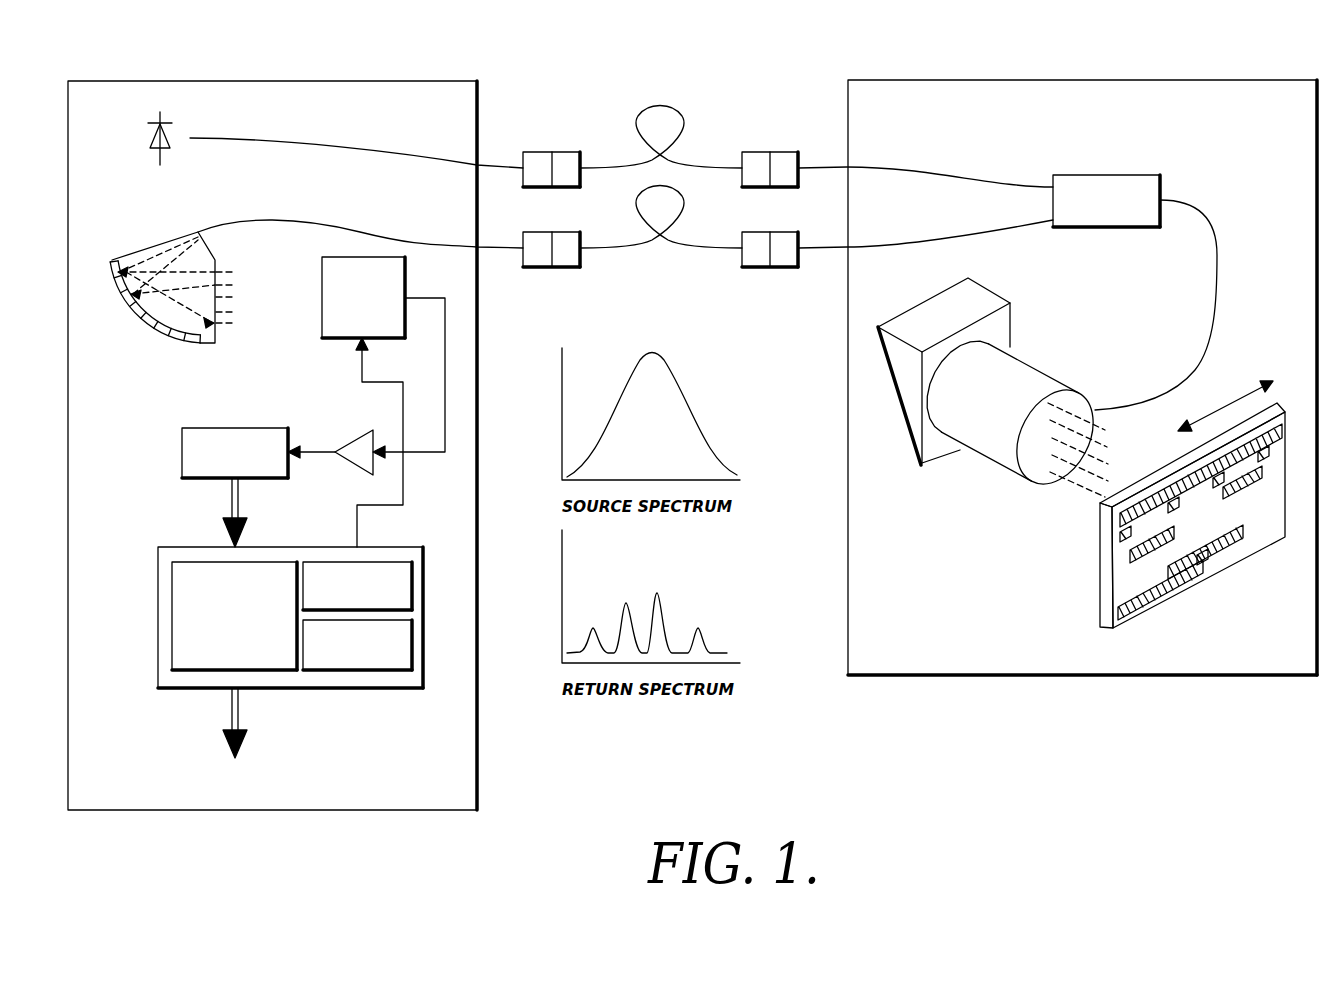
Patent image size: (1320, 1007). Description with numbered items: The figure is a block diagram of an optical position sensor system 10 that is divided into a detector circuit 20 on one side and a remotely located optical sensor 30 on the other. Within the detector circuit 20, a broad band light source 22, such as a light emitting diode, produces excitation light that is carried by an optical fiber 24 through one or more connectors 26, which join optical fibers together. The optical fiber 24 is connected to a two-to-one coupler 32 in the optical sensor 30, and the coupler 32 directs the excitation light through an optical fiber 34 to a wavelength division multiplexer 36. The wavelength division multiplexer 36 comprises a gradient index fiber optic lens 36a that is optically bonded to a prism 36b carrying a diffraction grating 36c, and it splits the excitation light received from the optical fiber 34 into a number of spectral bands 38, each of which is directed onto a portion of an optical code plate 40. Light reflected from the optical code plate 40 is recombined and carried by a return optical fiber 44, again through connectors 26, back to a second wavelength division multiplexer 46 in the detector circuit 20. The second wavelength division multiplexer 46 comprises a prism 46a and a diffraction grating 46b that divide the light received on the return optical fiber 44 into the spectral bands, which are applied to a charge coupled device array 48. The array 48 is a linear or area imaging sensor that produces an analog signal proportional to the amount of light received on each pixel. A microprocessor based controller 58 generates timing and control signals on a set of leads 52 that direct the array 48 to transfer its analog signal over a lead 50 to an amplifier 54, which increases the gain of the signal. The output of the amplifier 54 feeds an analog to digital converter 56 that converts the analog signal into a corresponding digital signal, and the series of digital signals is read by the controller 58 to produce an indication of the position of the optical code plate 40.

The fiber optic sensing system 10 is at (793, 66).
The detector circuit 20 is at (386, 73).
The light source 22 is at (166, 124).
The optical fiber 24 is at (419, 130).
The connectors 26 is at (565, 152).
The optical sensor 30 is at (1263, 66).
The 2-to-1 coupler 32 is at (1128, 175).
The optical fiber 34 is at (1218, 232).
The wavelength division multiplexer 36 is at (985, 420).
The gradient index fiber optic lens 36a is at (993, 457).
The prism 36b is at (982, 302).
The diffraction grating 36c is at (908, 450).
The spectral bands 38 is at (1072, 494).
The optical code plate 40 is at (1145, 612).
The return optical fiber 44 is at (328, 220).
The second wavelength division multiplexer 46 is at (160, 305).
The prism 46a is at (156, 250).
The diffraction grating 46b is at (130, 312).
The CCD array 48 is at (322, 280).
The lead 50 is at (437, 298).
The set of leads 52 is at (393, 382).
The amplifier 54 is at (356, 444).
The analog to digital converter 56 is at (243, 428).
The microprocessor based controller 58 is at (385, 688).